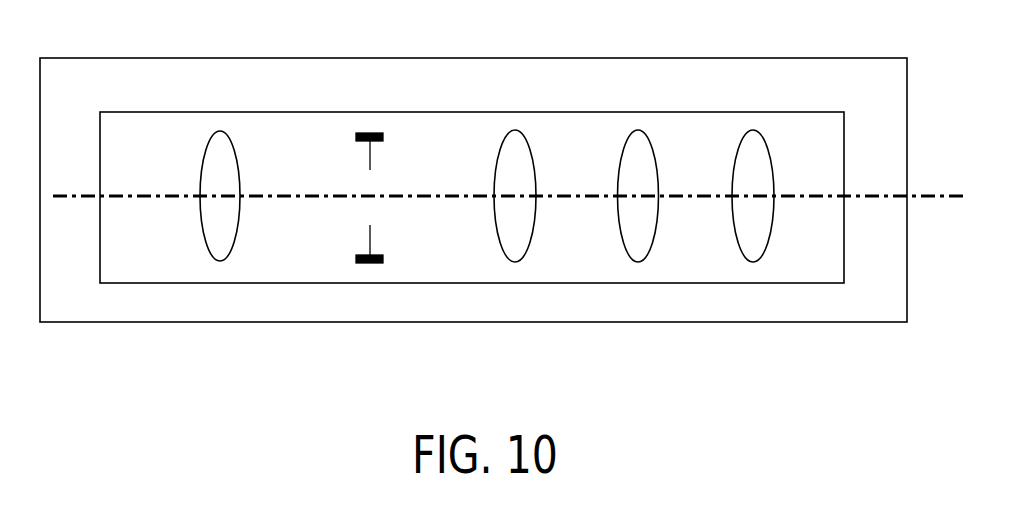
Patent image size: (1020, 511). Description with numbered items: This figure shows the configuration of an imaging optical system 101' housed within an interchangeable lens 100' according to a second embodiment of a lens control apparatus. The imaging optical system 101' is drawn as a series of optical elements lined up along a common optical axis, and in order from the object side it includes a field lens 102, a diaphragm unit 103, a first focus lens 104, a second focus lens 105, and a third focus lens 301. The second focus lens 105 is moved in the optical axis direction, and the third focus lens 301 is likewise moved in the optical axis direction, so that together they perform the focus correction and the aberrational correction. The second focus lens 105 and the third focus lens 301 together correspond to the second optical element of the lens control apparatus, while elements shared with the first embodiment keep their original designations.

The interchangeable lens 100' is at (473, 162).
The imaging optical system 101' is at (472, 174).
The field lens 102 is at (239, 167).
The diaphragm unit 103 is at (383, 136).
The first focus lens 104 is at (535, 165).
The second focus lens 105 is at (658, 165).
The third focus lens 301 is at (773, 162).